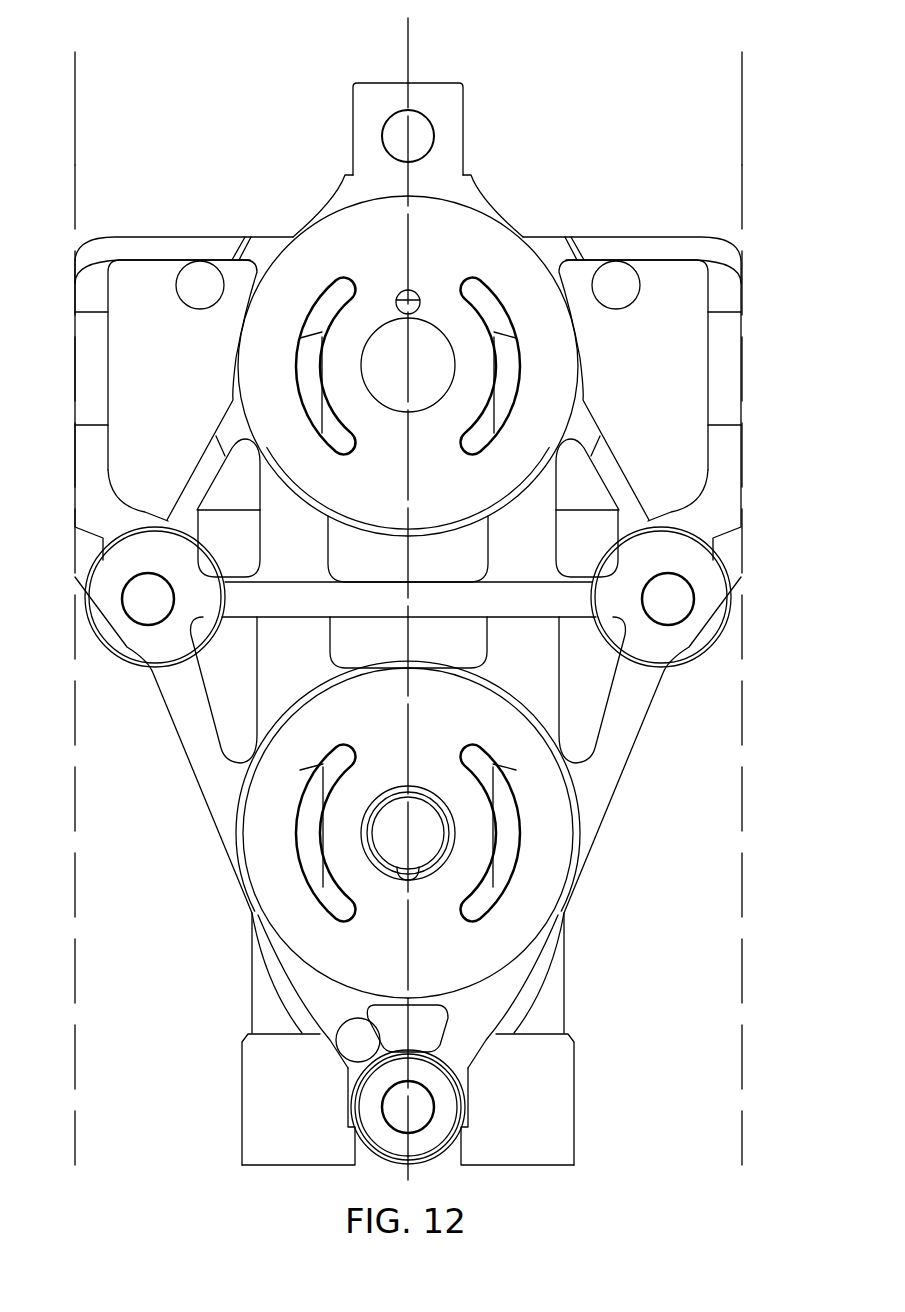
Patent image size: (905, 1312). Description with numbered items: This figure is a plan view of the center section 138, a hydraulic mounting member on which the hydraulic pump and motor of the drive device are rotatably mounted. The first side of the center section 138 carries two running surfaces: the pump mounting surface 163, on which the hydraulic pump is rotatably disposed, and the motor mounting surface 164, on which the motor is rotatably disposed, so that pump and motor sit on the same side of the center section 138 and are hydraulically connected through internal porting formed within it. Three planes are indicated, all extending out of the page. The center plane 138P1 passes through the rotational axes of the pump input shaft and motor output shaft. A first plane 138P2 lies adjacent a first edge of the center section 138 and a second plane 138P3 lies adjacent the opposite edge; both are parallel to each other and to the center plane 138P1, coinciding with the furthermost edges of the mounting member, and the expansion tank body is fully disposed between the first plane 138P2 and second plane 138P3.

The center section 138 is at (540, 176).
The center plane 138P1 is at (408, 40).
The first plane 138P2 is at (75, 73).
The second plane 138P3 is at (742, 72).
The pump mounting surface 163 is at (380, 727).
The motor mounting surface 164 is at (380, 251).